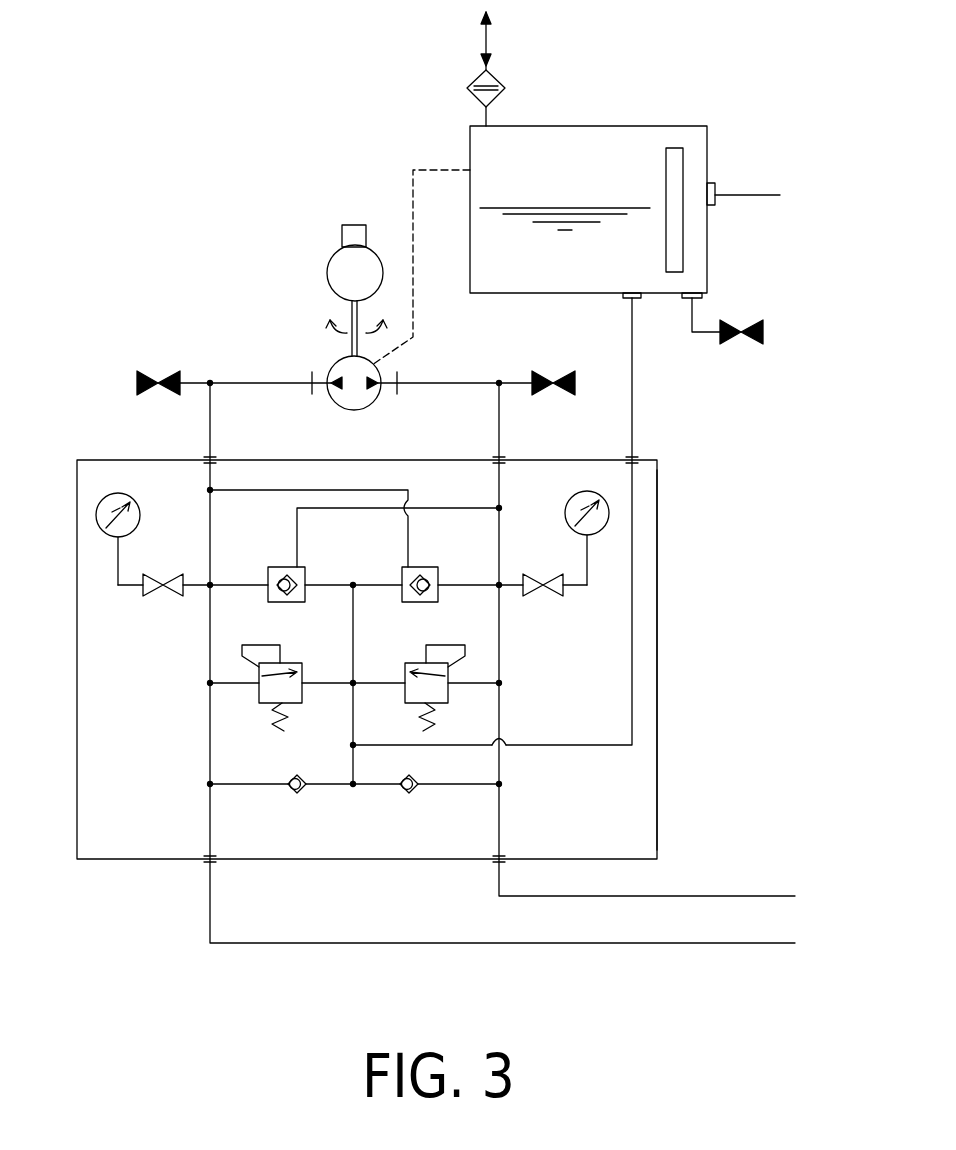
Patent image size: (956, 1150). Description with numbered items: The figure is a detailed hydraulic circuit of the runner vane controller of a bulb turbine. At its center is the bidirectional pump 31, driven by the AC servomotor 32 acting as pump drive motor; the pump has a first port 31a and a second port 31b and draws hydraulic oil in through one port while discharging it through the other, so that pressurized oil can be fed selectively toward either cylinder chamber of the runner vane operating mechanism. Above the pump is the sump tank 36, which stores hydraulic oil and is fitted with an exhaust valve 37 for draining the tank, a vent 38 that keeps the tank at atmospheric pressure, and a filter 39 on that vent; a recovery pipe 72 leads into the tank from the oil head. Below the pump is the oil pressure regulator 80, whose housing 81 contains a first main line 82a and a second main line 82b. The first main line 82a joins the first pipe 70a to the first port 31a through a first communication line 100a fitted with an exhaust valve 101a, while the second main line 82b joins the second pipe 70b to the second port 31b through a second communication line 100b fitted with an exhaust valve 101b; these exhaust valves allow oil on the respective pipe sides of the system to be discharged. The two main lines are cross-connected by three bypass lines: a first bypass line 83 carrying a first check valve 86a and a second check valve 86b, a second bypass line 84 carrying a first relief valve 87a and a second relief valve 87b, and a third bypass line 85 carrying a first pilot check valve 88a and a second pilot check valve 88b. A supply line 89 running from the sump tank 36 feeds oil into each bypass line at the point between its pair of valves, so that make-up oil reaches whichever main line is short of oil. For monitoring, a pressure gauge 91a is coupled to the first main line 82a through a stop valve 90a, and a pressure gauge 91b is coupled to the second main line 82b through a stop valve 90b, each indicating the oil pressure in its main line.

The bidirectional pump 31 is at (350, 412).
The first port 31a is at (322, 392).
The second port 31b is at (398, 392).
The AC servomotor 32 is at (327, 273).
The sump tank 36 is at (620, 126).
The exhaust valve 37 is at (735, 343).
The vent 38 is at (483, 46).
The filter 39 is at (500, 80).
The first pipe 70a is at (752, 946).
The second pipe 70b is at (745, 893).
The recovery pipe 72 is at (745, 195).
The oil pressure regulator 80 is at (659, 692).
The housing 81 is at (659, 598).
The first main line 82a is at (208, 722).
The second main line 82b is at (501, 712).
The first bypass line 83 is at (334, 788).
The second bypass line 84 is at (322, 688).
The third bypass line 85 is at (335, 580).
The first check valve 86a is at (293, 794).
The second check valve 86b is at (414, 794).
The first relief valve 87a is at (304, 670).
The second relief valve 87b is at (404, 670).
The first pilot check valve 88a is at (276, 568).
The second pilot check valve 88b is at (426, 568).
The supply line 89 is at (592, 748).
The stop valve 90a is at (153, 593).
The stop valve 90b is at (536, 592).
The pressure gauge 91a is at (167, 500).
The pressure gauge 91b is at (565, 516).
The first communication line 100a is at (262, 382).
The second communication line 100b is at (432, 382).
The exhaust valve 101a is at (170, 372).
The exhaust valve 101b is at (540, 372).